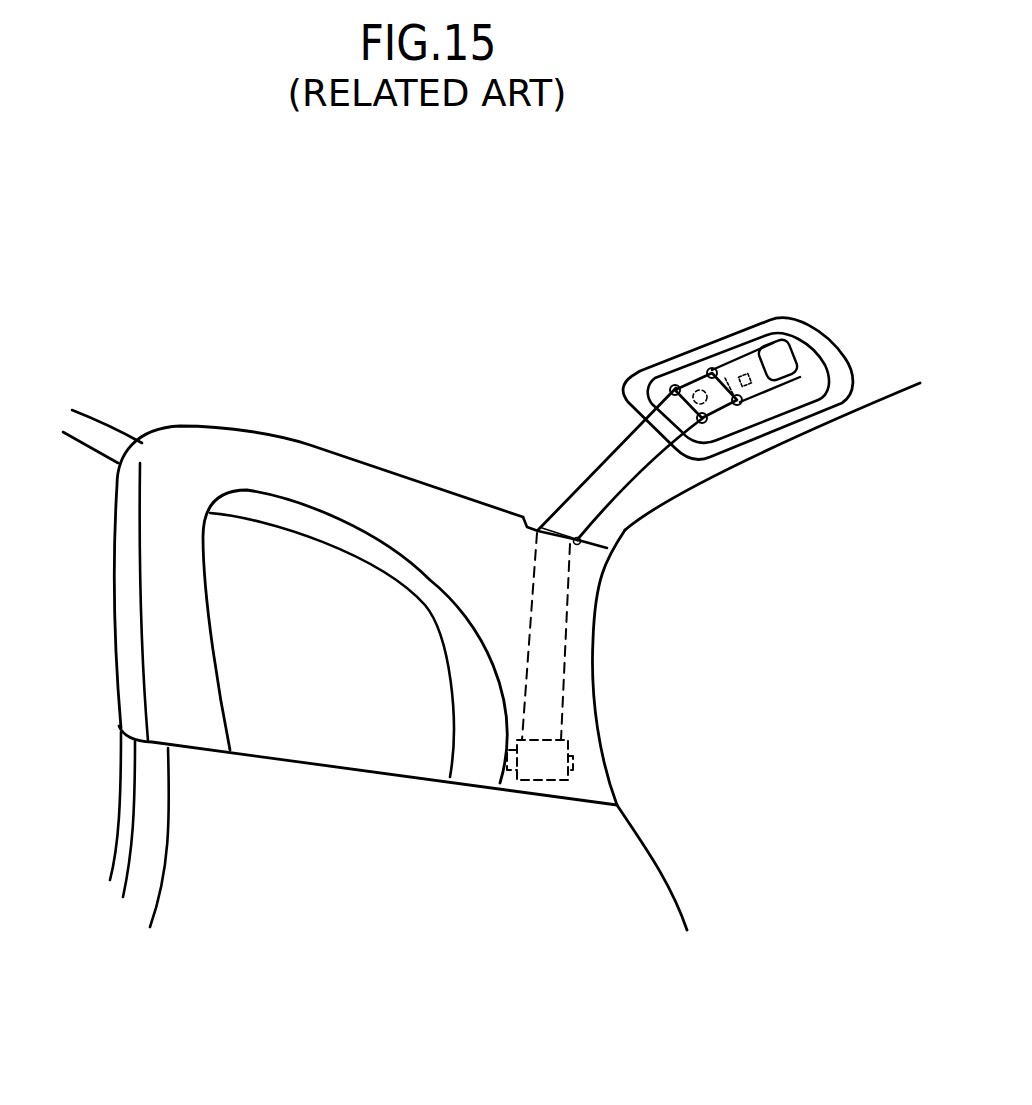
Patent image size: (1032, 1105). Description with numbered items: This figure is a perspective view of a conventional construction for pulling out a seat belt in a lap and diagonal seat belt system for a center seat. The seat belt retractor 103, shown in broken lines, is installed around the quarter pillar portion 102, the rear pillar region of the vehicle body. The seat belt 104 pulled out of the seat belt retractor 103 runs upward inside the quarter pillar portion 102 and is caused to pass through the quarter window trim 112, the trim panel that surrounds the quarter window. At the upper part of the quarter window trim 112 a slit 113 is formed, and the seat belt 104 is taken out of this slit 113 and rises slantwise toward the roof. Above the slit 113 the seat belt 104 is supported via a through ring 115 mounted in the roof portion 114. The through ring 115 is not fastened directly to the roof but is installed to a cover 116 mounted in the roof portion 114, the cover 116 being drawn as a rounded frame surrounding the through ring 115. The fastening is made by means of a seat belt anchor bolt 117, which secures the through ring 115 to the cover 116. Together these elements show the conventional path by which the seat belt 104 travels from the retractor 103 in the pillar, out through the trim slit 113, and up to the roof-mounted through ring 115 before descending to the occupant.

The quarter pillar portion 102 is at (583, 642).
The seat belt retractor 103 is at (573, 769).
The seat belt 104 is at (630, 467).
The quarter window trim 112 is at (365, 483).
The slit 113 is at (538, 533).
The roof portion 114 is at (882, 363).
The through ring 115 is at (670, 387).
The cover 116 is at (742, 323).
The seat belt anchor bolt 117 is at (726, 410).